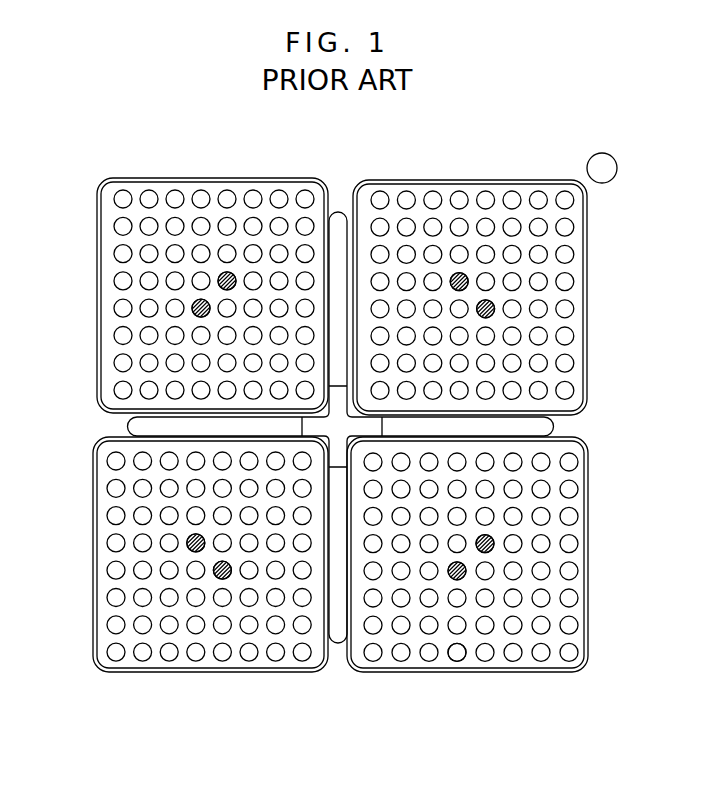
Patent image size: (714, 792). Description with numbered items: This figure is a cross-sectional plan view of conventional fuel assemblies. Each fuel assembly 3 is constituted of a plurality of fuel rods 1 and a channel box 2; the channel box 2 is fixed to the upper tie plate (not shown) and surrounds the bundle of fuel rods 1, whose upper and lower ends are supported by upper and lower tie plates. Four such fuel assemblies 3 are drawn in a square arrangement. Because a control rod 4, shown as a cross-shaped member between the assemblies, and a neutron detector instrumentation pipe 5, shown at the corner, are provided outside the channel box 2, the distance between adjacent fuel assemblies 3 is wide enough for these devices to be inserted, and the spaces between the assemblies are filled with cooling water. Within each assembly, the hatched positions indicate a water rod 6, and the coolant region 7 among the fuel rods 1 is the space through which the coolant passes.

The fuel rod 1 is at (446, 656).
The channel box 2 is at (247, 673).
The fuel assembly 3 is at (233, 178).
The control rod 4 is at (336, 645).
The neutron detector instrumentation pipe 5 is at (604, 153).
The water rod 6 is at (190, 546).
The coolant region 7 is at (128, 657).